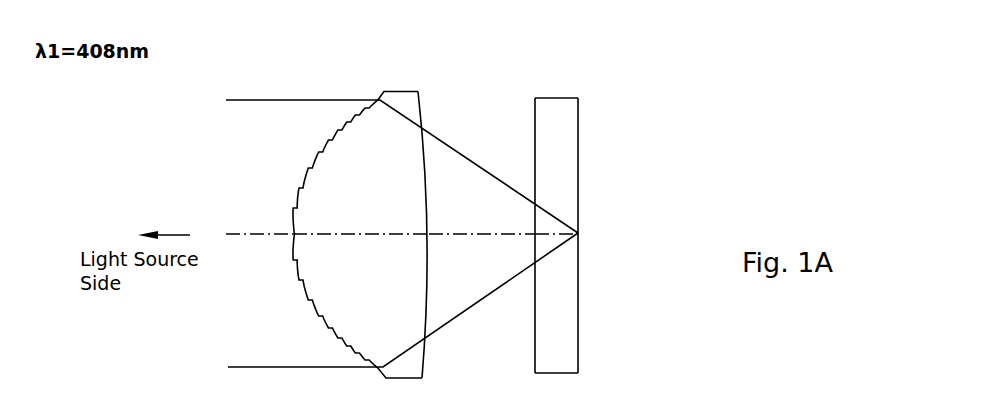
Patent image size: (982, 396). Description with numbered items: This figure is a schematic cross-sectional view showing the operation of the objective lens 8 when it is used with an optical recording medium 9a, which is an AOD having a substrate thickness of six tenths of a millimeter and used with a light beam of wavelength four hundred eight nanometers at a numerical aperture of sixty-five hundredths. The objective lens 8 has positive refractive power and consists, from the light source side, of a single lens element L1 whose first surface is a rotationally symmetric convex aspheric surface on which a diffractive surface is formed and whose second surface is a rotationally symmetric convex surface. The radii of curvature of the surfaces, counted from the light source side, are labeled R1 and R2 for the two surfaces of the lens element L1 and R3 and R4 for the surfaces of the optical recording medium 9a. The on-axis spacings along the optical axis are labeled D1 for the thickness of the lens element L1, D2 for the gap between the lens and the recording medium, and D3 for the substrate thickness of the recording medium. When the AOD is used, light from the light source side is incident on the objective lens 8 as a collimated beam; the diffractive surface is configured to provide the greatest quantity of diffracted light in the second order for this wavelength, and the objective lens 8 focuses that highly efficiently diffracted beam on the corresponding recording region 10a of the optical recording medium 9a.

The objective lens 8 is at (440, 66).
The lens element L1 is at (401, 91).
The first surface radius of curvature R1 is at (292, 243).
The second surface radius of curvature R2 is at (430, 253).
The optical recording medium 9a is at (612, 65).
The recording region 10a is at (578, 148).
The third surface radius of curvature R3 is at (536, 338).
The fourth surface radius of curvature R4 is at (578, 338).
The first on-axis surface spacing D1 is at (372, 233).
The second on-axis surface spacing D2 is at (470, 233).
The third on-axis surface spacing D3 is at (561, 233).